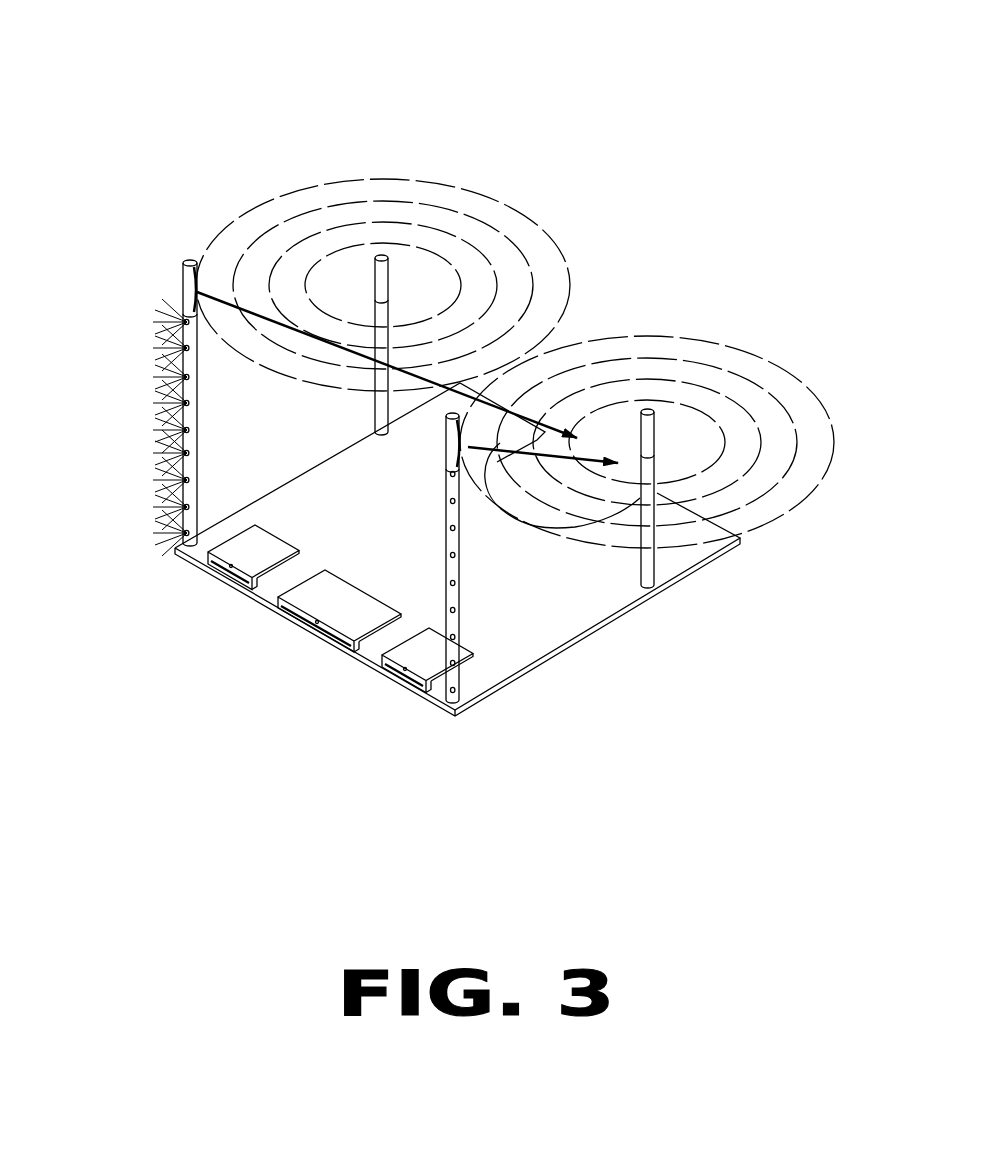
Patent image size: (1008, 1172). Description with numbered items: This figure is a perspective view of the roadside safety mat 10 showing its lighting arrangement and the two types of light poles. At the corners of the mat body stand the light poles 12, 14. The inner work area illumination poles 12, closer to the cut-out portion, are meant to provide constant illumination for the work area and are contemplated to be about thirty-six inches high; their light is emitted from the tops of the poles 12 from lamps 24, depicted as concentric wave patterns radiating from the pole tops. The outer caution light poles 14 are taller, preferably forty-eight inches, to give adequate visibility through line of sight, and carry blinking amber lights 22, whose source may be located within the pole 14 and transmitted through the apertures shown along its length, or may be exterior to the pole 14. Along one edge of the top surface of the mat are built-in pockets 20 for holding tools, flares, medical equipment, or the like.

The roadside safety mat 10 is at (270, 115).
The work area illumination poles 12 is at (375, 418).
The caution light poles 14 is at (193, 520).
The built-in pockets 20 is at (226, 558).
The blinking amber lights 22 is at (156, 333).
The lamps 24 is at (393, 272).